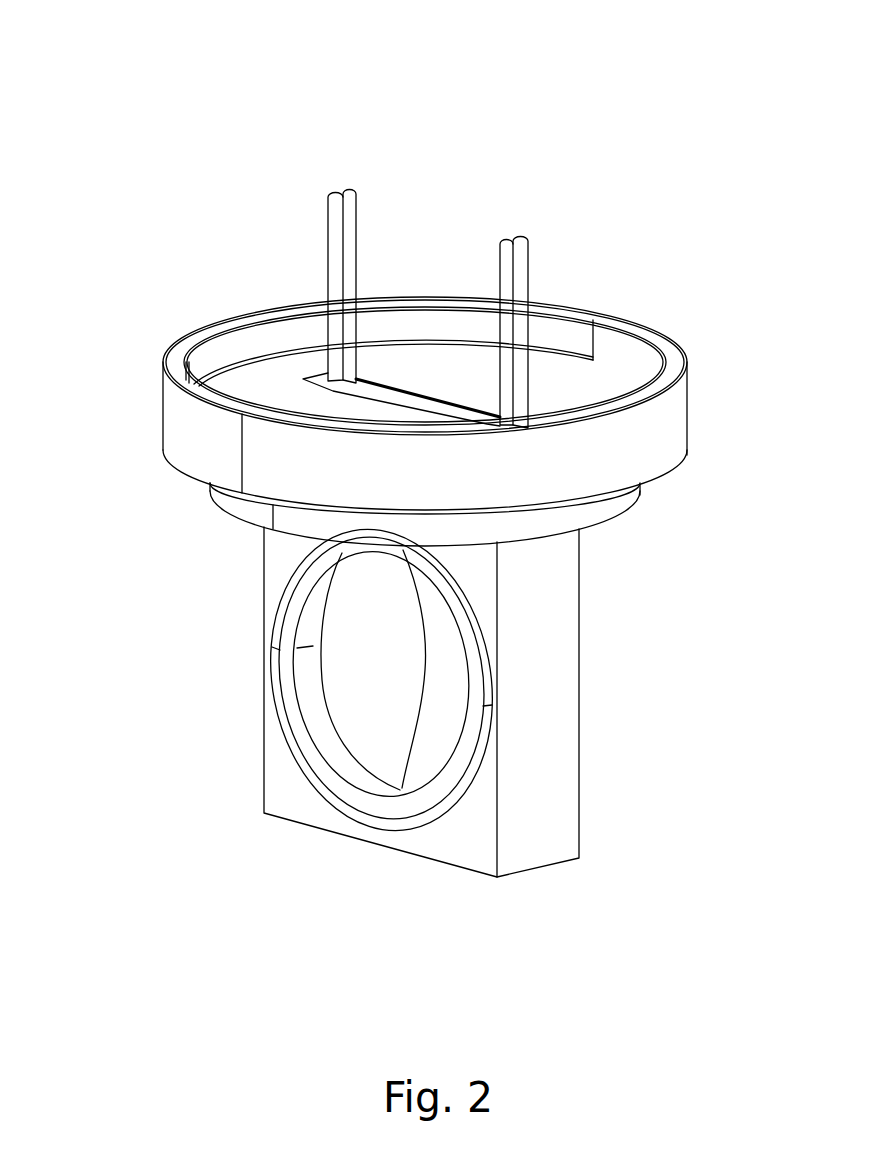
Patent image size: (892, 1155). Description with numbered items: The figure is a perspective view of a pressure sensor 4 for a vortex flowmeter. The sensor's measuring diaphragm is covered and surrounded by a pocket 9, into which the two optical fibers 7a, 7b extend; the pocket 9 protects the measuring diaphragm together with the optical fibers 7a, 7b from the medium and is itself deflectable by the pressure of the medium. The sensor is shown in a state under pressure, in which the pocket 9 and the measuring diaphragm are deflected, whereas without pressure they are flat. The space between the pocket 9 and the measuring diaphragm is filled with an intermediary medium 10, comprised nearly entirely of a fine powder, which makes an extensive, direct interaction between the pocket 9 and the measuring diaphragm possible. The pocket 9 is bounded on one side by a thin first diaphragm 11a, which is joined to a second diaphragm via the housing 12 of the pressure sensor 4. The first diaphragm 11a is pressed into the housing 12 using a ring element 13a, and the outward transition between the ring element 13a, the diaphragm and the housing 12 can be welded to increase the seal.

The pressure sensor 4 is at (646, 267).
The optical fiber 7a is at (338, 230).
The optical fiber 7b is at (353, 196).
The pocket 9 is at (320, 752).
The intermediary medium 10 is at (414, 400).
The first diaphragm 11a is at (370, 777).
The housing 12 is at (457, 843).
The ring element 13a is at (230, 841).